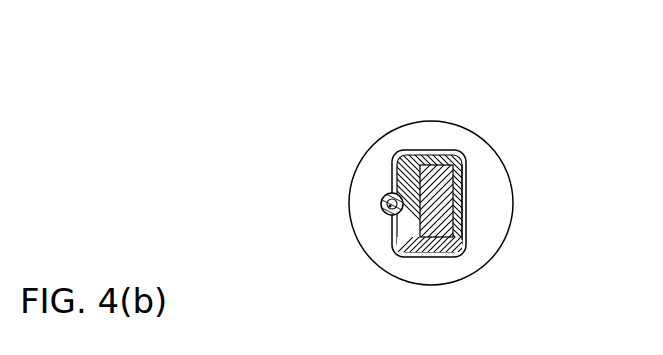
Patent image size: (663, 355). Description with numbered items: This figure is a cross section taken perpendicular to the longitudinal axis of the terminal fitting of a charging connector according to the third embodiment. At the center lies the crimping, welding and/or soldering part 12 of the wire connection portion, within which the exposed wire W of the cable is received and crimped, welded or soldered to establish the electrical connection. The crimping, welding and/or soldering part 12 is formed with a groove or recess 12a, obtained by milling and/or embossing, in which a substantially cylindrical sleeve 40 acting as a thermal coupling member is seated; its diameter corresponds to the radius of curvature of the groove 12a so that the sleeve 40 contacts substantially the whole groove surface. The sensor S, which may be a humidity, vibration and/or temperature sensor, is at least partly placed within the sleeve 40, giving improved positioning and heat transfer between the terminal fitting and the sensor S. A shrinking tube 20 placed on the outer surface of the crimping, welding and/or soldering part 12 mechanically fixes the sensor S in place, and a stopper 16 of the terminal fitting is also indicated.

The crimping, welding and/or soldering part 12 is at (457, 242).
The groove or recess 12a is at (405, 200).
The stopper 16 is at (443, 267).
The shrinking tube 20 is at (468, 214).
The sleeve 40 is at (388, 200).
The wire W is at (437, 197).
The sensor S is at (390, 206).